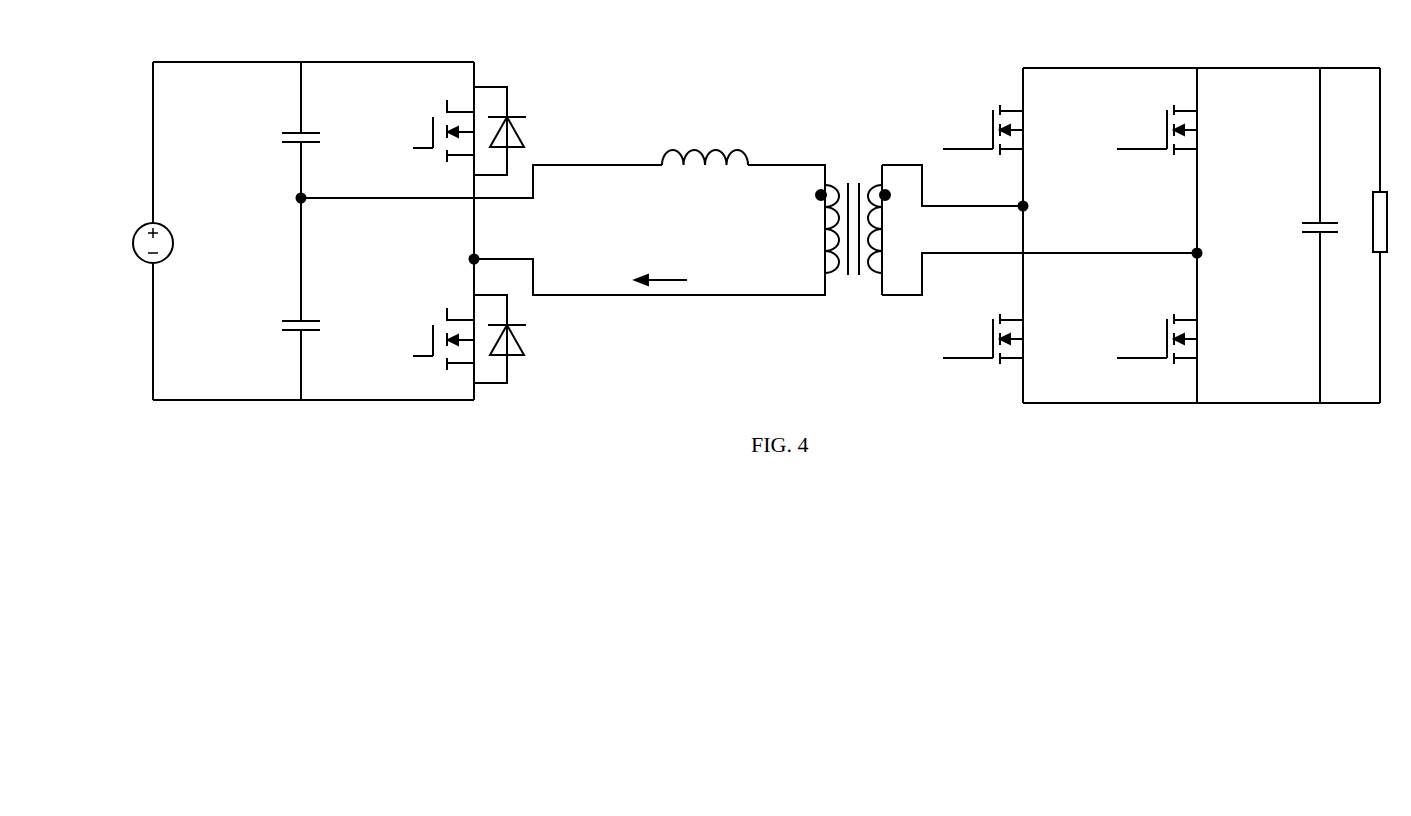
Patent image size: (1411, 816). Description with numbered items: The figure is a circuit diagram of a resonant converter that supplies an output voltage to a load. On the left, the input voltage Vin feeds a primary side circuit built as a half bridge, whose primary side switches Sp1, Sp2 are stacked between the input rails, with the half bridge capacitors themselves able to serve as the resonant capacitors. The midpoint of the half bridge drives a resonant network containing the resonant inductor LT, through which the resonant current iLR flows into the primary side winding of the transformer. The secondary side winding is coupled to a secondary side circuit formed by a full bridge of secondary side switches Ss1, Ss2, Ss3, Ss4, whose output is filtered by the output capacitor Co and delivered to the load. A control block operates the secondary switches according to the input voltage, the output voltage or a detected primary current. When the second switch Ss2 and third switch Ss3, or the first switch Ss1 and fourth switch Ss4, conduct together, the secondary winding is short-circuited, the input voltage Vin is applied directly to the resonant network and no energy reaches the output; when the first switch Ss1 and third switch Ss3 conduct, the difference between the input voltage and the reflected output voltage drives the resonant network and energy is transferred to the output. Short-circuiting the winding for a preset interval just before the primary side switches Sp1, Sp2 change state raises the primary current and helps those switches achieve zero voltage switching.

The input voltage Vin is at (126, 239).
The primary side switch Sp1 is at (442, 131).
The primary side switch Sp2 is at (442, 339).
The resonant inductor LT is at (705, 133).
The resonant inductor current iLR is at (688, 264).
The first switch Ss1 is at (978, 126).
The second switch Ss2 is at (978, 338).
The third switch Ss3 is at (1151, 338).
The fourth switch Ss4 is at (1151, 125).
The output capacitor Co is at (1297, 235).